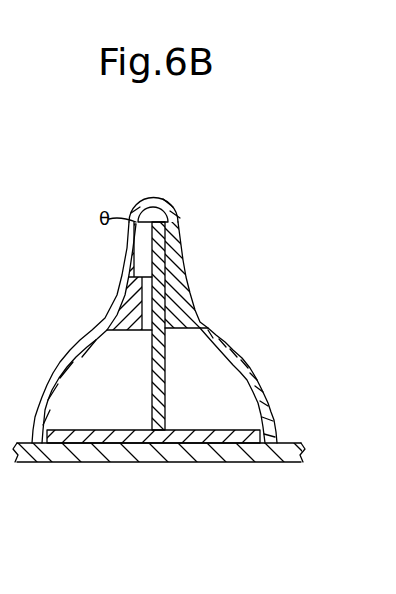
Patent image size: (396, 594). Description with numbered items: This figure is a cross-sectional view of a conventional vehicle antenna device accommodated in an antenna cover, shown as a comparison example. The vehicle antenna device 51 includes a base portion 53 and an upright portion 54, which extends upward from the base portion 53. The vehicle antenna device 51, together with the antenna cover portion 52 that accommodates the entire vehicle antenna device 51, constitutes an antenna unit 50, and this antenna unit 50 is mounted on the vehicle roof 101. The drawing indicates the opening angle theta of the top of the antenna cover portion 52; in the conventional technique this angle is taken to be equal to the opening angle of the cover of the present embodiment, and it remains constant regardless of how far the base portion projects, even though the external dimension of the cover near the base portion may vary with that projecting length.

The antenna unit 50 is at (253, 176).
The vehicle antenna device 51 is at (168, 247).
The antenna cover portion 52 is at (160, 193).
The base portion 53 is at (86, 444).
The upright portion 54 is at (166, 390).
The vehicle roof 101 is at (176, 455).